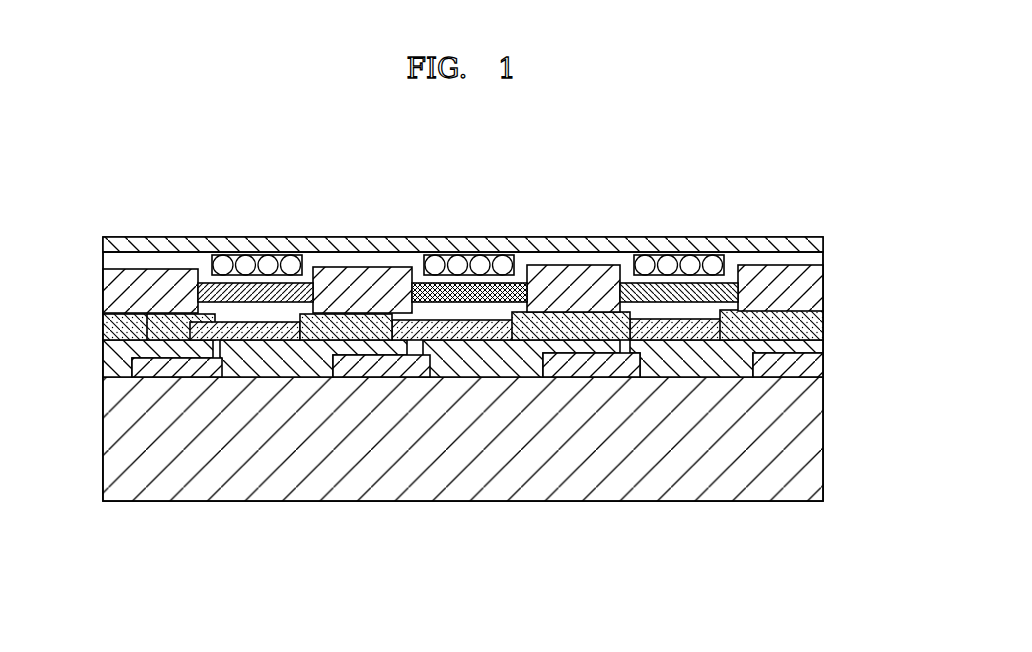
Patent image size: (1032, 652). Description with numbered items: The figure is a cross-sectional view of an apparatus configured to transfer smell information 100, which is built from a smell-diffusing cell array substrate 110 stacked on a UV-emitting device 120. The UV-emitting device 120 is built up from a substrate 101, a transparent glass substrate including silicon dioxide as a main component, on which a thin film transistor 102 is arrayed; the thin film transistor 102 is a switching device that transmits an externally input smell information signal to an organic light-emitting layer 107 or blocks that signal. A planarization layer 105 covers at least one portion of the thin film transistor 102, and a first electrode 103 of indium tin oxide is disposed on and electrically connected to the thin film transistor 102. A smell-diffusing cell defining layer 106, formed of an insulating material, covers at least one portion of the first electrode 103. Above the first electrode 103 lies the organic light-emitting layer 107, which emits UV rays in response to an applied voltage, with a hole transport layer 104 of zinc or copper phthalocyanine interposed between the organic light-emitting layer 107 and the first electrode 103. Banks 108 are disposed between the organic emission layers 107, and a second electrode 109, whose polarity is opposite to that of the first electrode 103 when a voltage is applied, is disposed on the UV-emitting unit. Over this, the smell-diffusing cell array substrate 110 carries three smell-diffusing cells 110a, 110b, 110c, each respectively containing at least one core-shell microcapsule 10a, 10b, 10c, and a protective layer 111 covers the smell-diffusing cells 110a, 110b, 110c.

The apparatus configured to transfer smell information 100 is at (818, 188).
The substrate 101 is at (820, 434).
The thin film transistor 102 is at (176, 376).
The first electrode 103 is at (288, 339).
The hole transport layer 104 is at (257, 315).
The planarization layer 105 is at (821, 347).
The smell-diffusing cell defining layer 106 is at (148, 327).
The organic light-emitting layer 107 is at (674, 297).
The banks 108 is at (820, 284).
The second electrode 109 is at (820, 257).
The smell-diffusing cell array substrate 110 is at (750, 165).
The smell-diffusing cell 110a is at (272, 224).
The smell-diffusing cell 110b is at (482, 222).
The smell-diffusing cell 110c is at (693, 222).
The microcapsule 10a is at (244, 255).
The microcapsule 10b is at (457, 255).
The microcapsule 10c is at (662, 255).
The protective layer 111 is at (822, 238).
The UV-emitting device 120 is at (98, 260).